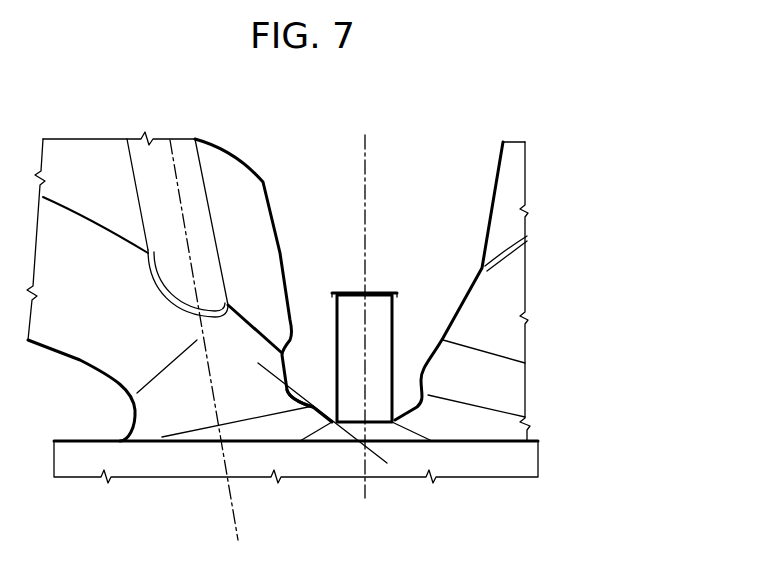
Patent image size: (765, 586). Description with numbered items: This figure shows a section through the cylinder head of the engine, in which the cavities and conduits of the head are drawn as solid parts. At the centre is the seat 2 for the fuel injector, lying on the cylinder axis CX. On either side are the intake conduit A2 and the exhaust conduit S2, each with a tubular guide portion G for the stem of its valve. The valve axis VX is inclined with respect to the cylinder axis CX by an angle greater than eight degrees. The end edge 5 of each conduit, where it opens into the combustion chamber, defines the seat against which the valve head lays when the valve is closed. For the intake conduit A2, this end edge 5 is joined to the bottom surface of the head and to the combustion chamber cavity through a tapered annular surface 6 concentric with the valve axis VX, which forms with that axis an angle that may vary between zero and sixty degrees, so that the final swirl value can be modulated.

The tubular guide portion G is at (137, 187).
The intake conduit A2 is at (75, 347).
The valve axis VX is at (190, 258).
The cylinder axis CX is at (367, 233).
The tapered annular surface 6 is at (328, 402).
The end edge 5 is at (123, 441).
The seat 2 is at (398, 348).
The exhaust conduit S2 is at (502, 303).